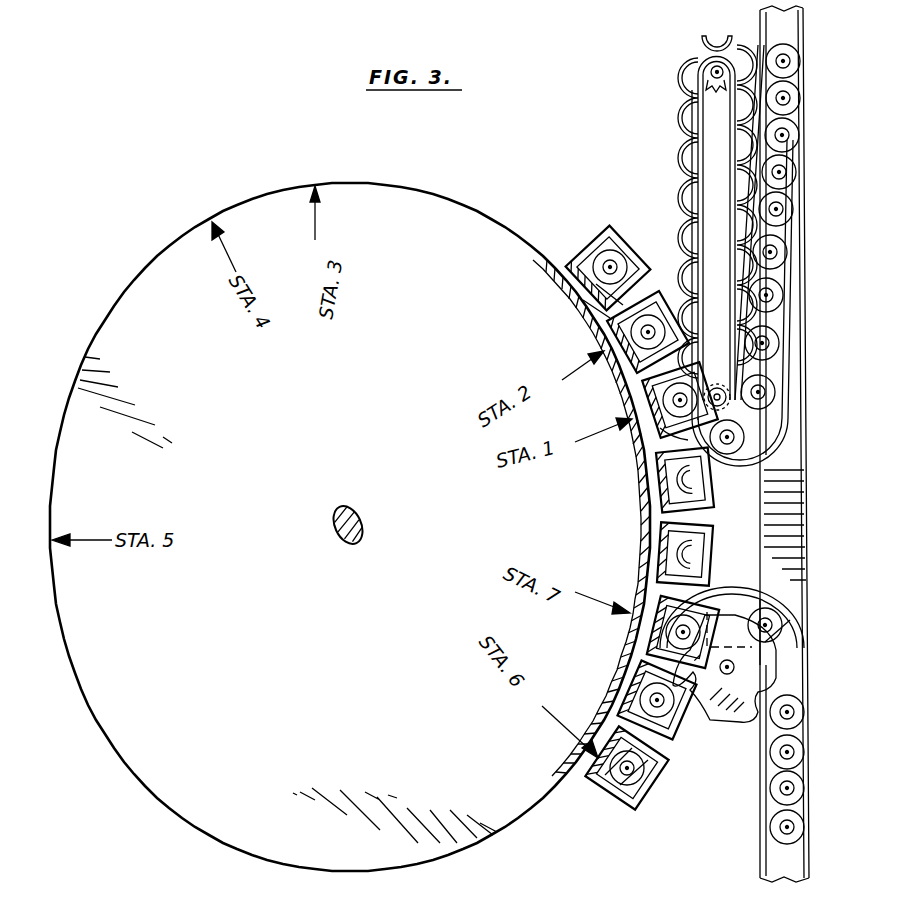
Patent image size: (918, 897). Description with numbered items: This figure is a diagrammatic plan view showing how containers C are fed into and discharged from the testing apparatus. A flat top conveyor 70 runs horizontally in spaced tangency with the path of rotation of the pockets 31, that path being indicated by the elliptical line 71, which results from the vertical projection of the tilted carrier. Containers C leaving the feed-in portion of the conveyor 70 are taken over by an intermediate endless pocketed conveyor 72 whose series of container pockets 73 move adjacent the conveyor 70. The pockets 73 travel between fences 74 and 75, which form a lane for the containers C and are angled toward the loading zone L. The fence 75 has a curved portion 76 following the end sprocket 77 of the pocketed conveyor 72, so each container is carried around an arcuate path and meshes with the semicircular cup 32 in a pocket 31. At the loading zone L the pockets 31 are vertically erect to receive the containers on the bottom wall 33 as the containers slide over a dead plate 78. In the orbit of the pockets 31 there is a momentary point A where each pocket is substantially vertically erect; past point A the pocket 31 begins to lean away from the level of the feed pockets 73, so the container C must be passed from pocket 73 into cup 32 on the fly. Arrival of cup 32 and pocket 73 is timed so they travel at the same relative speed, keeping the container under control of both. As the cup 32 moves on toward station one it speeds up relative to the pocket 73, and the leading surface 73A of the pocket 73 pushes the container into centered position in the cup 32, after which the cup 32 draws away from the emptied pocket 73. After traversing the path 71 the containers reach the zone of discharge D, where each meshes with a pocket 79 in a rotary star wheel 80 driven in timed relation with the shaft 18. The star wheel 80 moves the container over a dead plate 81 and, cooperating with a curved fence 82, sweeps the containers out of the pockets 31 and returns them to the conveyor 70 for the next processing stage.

The elliptical line 71 is at (246, 843).
The shaft 18 is at (336, 546).
The pocket 31 is at (580, 262).
The cup 32 is at (635, 332).
The bottom wall 33 is at (622, 236).
The flat top conveyor 70 is at (800, 530).
The intermediate endless pocketed conveyor 72 is at (676, 188).
The container pocket 73 is at (684, 114).
The leading surface 73A is at (664, 432).
The fence 74 is at (766, 196).
The fence 75 is at (786, 282).
The curved portion 76 is at (735, 478).
The end sprocket 77 is at (745, 380).
The dead plate 78 is at (748, 440).
The pocket 79 is at (708, 720).
The rotary star wheel 80 is at (772, 666).
The dead plate 81 is at (760, 600).
The curved fence 82 is at (742, 596).
The point A is at (648, 518).
The container C is at (790, 172).
The zone of discharge D is at (762, 602).
The loading zone L is at (760, 470).